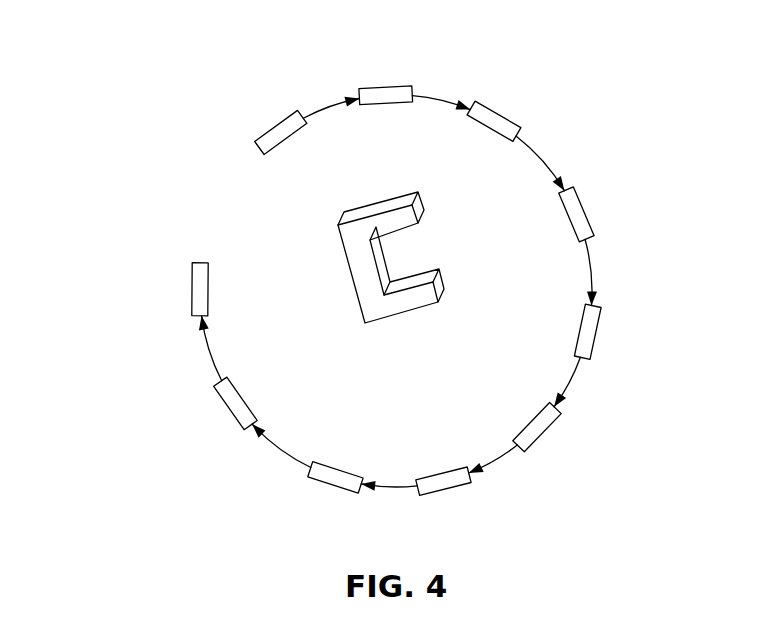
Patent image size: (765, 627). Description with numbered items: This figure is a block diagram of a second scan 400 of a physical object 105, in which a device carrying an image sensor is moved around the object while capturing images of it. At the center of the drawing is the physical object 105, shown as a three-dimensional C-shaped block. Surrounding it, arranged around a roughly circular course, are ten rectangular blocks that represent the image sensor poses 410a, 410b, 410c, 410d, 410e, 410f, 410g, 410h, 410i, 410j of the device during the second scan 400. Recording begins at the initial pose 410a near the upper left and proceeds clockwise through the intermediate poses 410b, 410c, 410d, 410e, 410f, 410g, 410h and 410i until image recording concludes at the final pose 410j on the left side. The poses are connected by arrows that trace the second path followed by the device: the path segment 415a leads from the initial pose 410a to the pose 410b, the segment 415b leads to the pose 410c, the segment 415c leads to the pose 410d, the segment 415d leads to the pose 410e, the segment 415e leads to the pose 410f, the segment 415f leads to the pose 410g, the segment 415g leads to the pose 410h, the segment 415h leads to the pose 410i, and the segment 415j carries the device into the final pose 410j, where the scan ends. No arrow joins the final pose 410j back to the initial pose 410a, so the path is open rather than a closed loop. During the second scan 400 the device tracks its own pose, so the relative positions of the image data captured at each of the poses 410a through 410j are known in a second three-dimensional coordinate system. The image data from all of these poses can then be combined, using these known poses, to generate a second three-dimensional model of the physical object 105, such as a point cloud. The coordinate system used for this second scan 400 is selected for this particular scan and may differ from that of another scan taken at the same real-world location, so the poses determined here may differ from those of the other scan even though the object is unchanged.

The second scan 400 is at (118, 96).
The physical object 105 is at (430, 206).
The initial image sensor pose 410a is at (277, 125).
The image sensor pose 410b is at (392, 87).
The image sensor pose 410c is at (498, 115).
The image sensor pose 410d is at (588, 222).
The image sensor pose 410e is at (595, 337).
The image sensor pose 410f is at (548, 427).
The image sensor pose 410g is at (443, 490).
The image sensor pose 410h is at (325, 482).
The image sensor pose 410i is at (232, 412).
The final image sensor pose 410j is at (192, 282).
The second path segment 415a is at (319, 110).
The second path segment 415b is at (432, 100).
The second path segment 415c is at (542, 160).
The second path segment 415d is at (591, 271).
The second path segment 415e is at (570, 381).
The second path segment 415f is at (494, 461).
The second path segment 415g is at (395, 487).
The second path segment 415h is at (284, 452).
The second path segment 415j is at (210, 352).